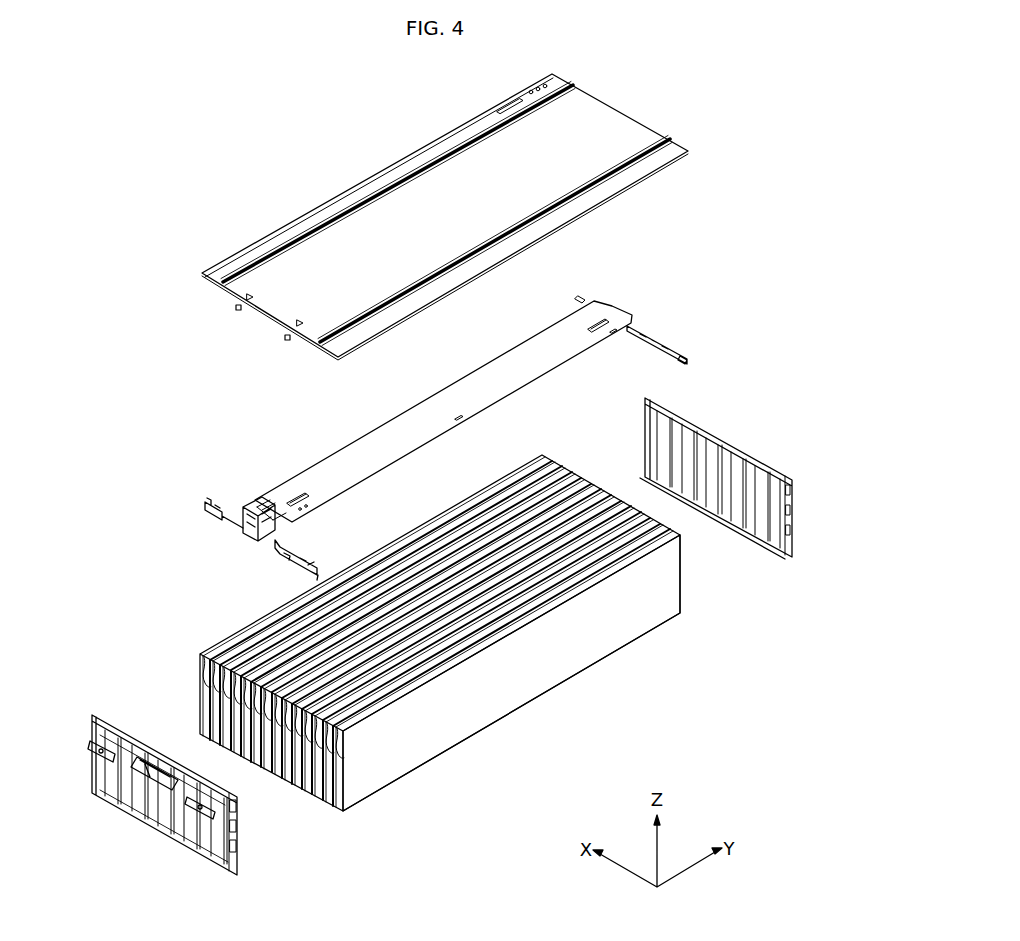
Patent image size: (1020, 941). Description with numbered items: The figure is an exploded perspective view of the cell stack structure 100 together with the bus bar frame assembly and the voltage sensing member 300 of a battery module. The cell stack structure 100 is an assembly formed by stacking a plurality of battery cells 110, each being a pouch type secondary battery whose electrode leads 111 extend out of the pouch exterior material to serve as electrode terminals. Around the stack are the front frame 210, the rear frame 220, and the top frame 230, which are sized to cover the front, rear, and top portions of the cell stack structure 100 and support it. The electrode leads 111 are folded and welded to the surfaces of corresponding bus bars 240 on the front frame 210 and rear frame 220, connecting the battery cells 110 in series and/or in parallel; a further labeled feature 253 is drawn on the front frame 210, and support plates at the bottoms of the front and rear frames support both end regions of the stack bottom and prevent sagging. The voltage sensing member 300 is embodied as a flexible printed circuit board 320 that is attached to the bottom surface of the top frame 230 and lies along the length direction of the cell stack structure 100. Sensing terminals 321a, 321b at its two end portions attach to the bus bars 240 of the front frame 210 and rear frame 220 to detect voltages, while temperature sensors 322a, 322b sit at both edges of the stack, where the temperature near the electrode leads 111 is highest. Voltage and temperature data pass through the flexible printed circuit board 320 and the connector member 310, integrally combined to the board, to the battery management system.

The cell stack structure 100 is at (418, 638).
The battery cell 110 is at (473, 727).
The electrode lead 111 is at (308, 787).
The front frame 210 is at (177, 800).
The rear frame 220 is at (716, 483).
The top frame 230 is at (360, 160).
The bus bar 240 is at (153, 833).
The mounting bracket 253 is at (152, 778).
The voltage sensing member 300 is at (398, 410).
The connector member 310 is at (243, 515).
The flexible printed circuit board 320 is at (345, 455).
The sensing terminal 321a is at (272, 556).
The sensing terminal 321b is at (655, 346).
The temperature sensor 322a is at (297, 493).
The temperature sensor 322b is at (600, 320).